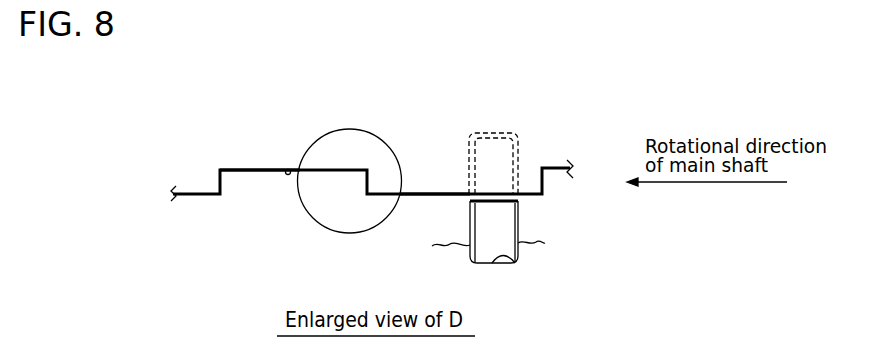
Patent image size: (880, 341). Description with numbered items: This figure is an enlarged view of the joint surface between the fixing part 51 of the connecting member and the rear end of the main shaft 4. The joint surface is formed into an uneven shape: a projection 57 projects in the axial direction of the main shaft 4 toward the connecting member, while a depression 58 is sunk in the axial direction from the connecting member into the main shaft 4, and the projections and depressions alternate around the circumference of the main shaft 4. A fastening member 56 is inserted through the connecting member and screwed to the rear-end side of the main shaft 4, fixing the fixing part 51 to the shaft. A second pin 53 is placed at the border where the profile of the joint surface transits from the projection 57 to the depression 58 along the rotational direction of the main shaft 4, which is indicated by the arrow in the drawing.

The main shaft 4 is at (265, 142).
The fixing part 51 is at (280, 245).
The second pin 53 is at (372, 128).
The fastening member 56 is at (500, 215).
The projection 57 is at (440, 190).
The depression 58 is at (288, 170).